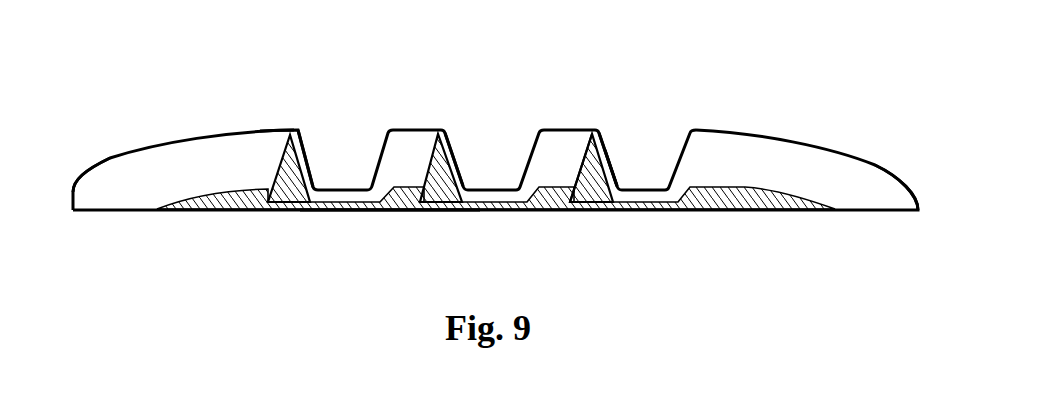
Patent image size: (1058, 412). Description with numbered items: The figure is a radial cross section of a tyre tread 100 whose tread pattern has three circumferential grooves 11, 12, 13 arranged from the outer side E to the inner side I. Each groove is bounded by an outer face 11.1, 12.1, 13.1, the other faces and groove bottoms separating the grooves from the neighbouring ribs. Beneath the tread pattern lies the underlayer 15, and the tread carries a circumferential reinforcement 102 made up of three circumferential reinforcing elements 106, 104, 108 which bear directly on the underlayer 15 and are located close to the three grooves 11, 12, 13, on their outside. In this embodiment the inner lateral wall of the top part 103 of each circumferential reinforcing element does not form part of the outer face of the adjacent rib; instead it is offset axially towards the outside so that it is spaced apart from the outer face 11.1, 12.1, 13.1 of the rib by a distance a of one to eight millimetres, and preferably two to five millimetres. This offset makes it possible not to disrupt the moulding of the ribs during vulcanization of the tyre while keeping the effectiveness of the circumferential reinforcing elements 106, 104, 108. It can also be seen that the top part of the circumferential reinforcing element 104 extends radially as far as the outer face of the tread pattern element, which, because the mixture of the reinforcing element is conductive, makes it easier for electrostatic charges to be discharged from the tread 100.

The tread 100 is at (352, 95).
The outer side E is at (127, 125).
The inner side I is at (883, 123).
The groove 11 is at (339, 150).
The outer face 11.1 is at (316, 155).
The groove 12 is at (485, 152).
The outer face 12.1 is at (467, 153).
The groove 13 is at (651, 148).
The outer face 13.1 is at (615, 158).
The distance a is at (603, 162).
The top part 103 is at (586, 168).
The circumferential reinforcing element 106 is at (283, 190).
The circumferential reinforcing element 104 is at (443, 177).
The circumferential reinforcing element 108 is at (593, 167).
The circumferential reinforcement 102 is at (465, 257).
The underlayer 15 is at (749, 201).